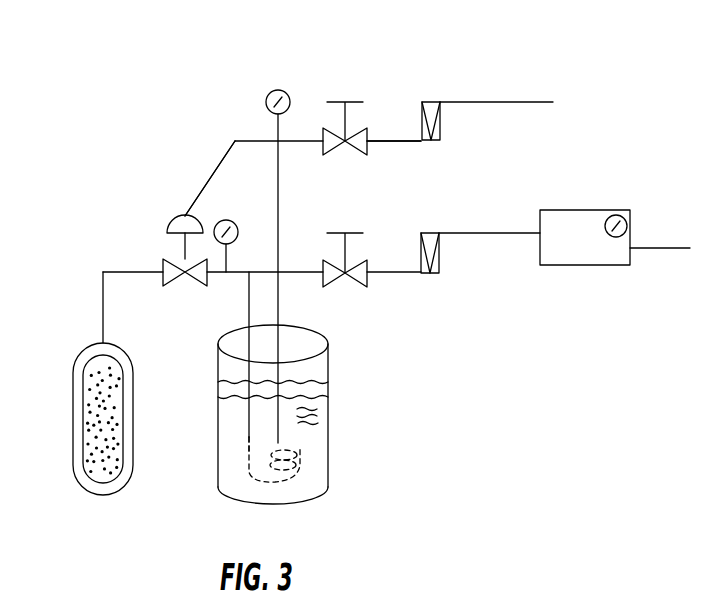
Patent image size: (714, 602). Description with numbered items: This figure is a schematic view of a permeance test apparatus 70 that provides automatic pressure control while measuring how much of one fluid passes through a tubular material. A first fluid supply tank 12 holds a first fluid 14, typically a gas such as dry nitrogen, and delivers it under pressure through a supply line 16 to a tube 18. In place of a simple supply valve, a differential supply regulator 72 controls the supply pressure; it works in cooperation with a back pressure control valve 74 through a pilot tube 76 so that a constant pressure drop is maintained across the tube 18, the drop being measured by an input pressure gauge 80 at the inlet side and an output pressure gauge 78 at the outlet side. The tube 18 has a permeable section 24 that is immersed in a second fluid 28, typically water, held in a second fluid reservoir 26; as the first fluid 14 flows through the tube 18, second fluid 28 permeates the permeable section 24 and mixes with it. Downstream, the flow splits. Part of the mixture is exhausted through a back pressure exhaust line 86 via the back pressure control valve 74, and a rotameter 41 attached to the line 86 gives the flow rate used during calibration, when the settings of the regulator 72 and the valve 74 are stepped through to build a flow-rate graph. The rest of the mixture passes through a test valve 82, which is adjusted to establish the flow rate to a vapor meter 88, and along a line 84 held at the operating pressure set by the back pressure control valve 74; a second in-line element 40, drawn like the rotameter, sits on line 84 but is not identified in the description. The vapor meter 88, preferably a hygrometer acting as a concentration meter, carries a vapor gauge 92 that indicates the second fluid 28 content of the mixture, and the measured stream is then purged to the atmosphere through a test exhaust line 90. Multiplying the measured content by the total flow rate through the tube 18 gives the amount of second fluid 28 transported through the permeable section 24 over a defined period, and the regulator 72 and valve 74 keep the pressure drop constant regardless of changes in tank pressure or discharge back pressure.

The first fluid supply tank 12 is at (77, 373).
The first fluid 14 is at (92, 437).
The supply line 16 is at (103, 294).
The tube 18 is at (249, 308).
The permeable section 24 is at (244, 455).
The second fluid reservoir 26 is at (318, 495).
The second fluid 28 is at (308, 425).
The filter 40 is at (437, 252).
The rotameter 41 is at (437, 120).
The permeance test apparatus 70 is at (564, 71).
The differential supply regulator 72 is at (170, 218).
The back pressure control valve 74 is at (352, 102).
The pilot tube 76 is at (205, 185).
The output pressure gauge 78 is at (285, 91).
The input pressure gauge 80 is at (236, 222).
The test valve 82 is at (352, 232).
The line 84 is at (530, 235).
The back pressure exhaust line 86 is at (398, 140).
The vapor meter 88 is at (581, 209).
The test exhaust line 90 is at (652, 248).
The vapor gauge 92 is at (612, 214).